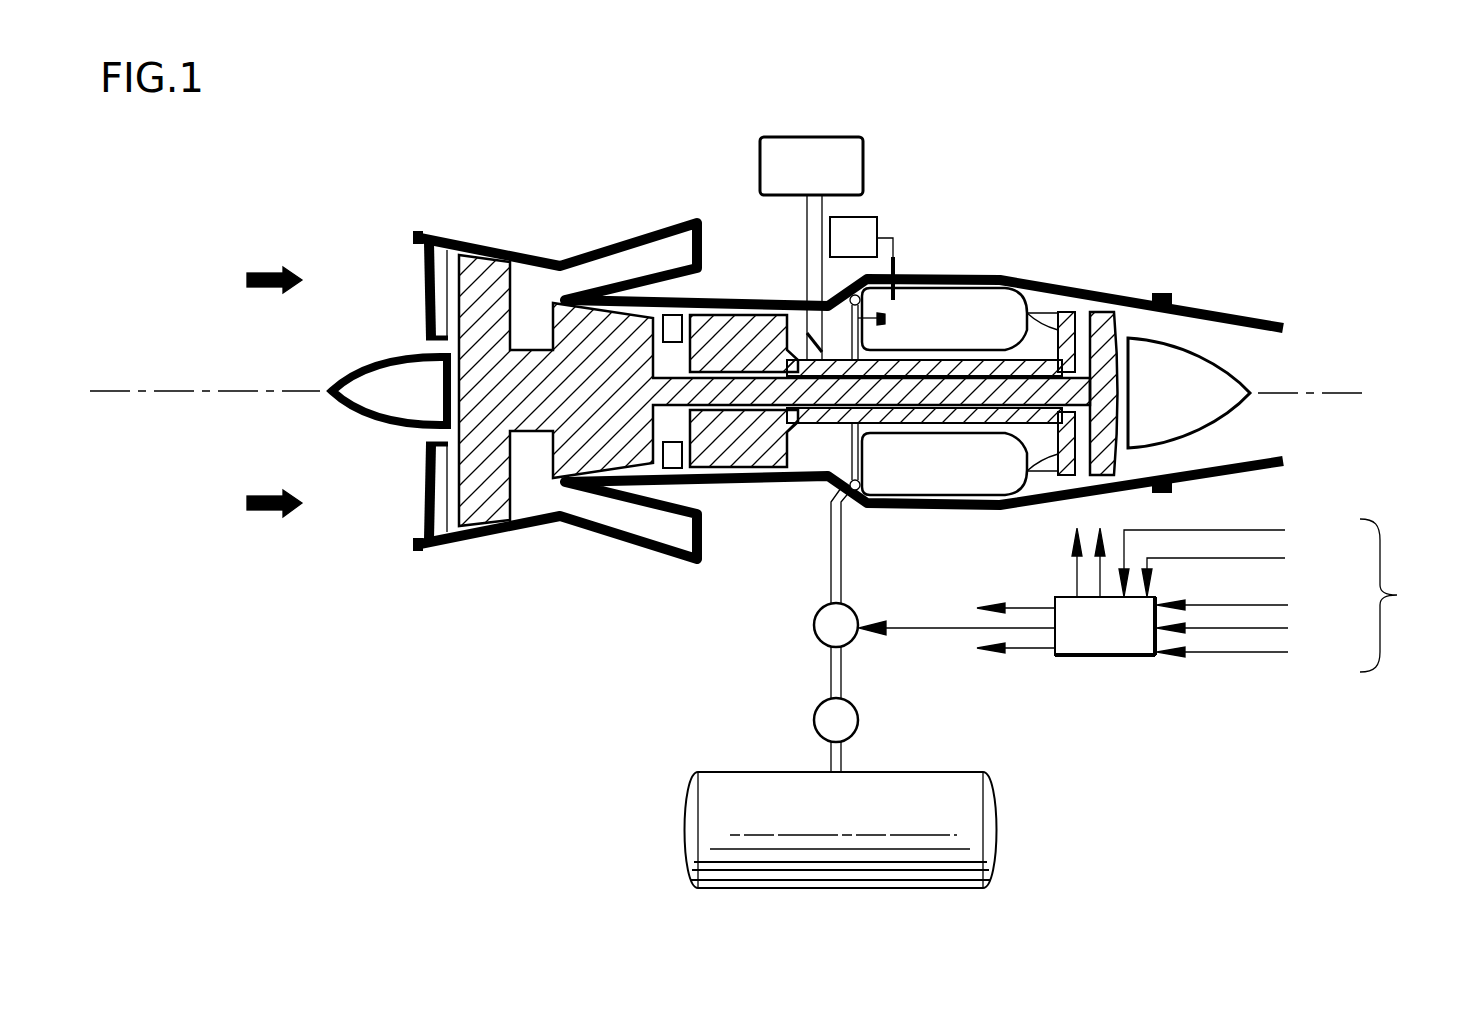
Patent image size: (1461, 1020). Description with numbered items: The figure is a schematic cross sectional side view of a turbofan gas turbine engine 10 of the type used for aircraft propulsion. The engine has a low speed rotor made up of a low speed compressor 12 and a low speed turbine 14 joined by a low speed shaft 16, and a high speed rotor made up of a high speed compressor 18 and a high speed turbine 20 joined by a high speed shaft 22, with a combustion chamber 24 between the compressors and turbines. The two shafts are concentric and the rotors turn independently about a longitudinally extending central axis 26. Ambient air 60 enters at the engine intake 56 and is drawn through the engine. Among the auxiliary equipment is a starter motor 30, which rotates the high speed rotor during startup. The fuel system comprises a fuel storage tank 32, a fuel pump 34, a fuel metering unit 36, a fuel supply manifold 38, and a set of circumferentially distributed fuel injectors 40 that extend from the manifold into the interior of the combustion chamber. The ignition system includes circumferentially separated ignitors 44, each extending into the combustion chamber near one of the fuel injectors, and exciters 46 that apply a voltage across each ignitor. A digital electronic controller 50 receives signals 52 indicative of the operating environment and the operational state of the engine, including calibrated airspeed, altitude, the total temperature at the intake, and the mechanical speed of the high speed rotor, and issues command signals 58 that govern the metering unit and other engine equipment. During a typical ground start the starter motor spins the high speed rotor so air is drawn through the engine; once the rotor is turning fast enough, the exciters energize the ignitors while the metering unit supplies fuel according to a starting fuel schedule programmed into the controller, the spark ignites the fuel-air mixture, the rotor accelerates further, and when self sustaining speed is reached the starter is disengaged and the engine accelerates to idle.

The gas turbine engine 10 is at (370, 255).
The low speed compressor 12 is at (567, 328).
The low speed turbine 14 is at (1128, 323).
The low speed shaft 16 is at (1010, 377).
The high speed compressor 18 is at (755, 328).
The high speed turbine 20 is at (1055, 318).
The high speed shaft 22 is at (845, 420).
The combustion chamber 24 is at (952, 274).
The central axis 26 is at (142, 389).
The starter motor 30 is at (828, 173).
The fuel storage tank 32 is at (847, 822).
The fuel pump 34 is at (820, 703).
The fuel metering unit 36 is at (818, 610).
The fuel supply manifold 38 is at (850, 468).
The fuel injectors 40 is at (887, 320).
The ignitors 44 is at (897, 272).
The exciters 46 is at (868, 249).
The digital electronic controller 50 is at (1125, 638).
The signals 52 is at (1282, 594).
The engine intake 56 is at (413, 523).
The command signals 58 is at (1040, 648).
The ambient air 60 is at (270, 290).